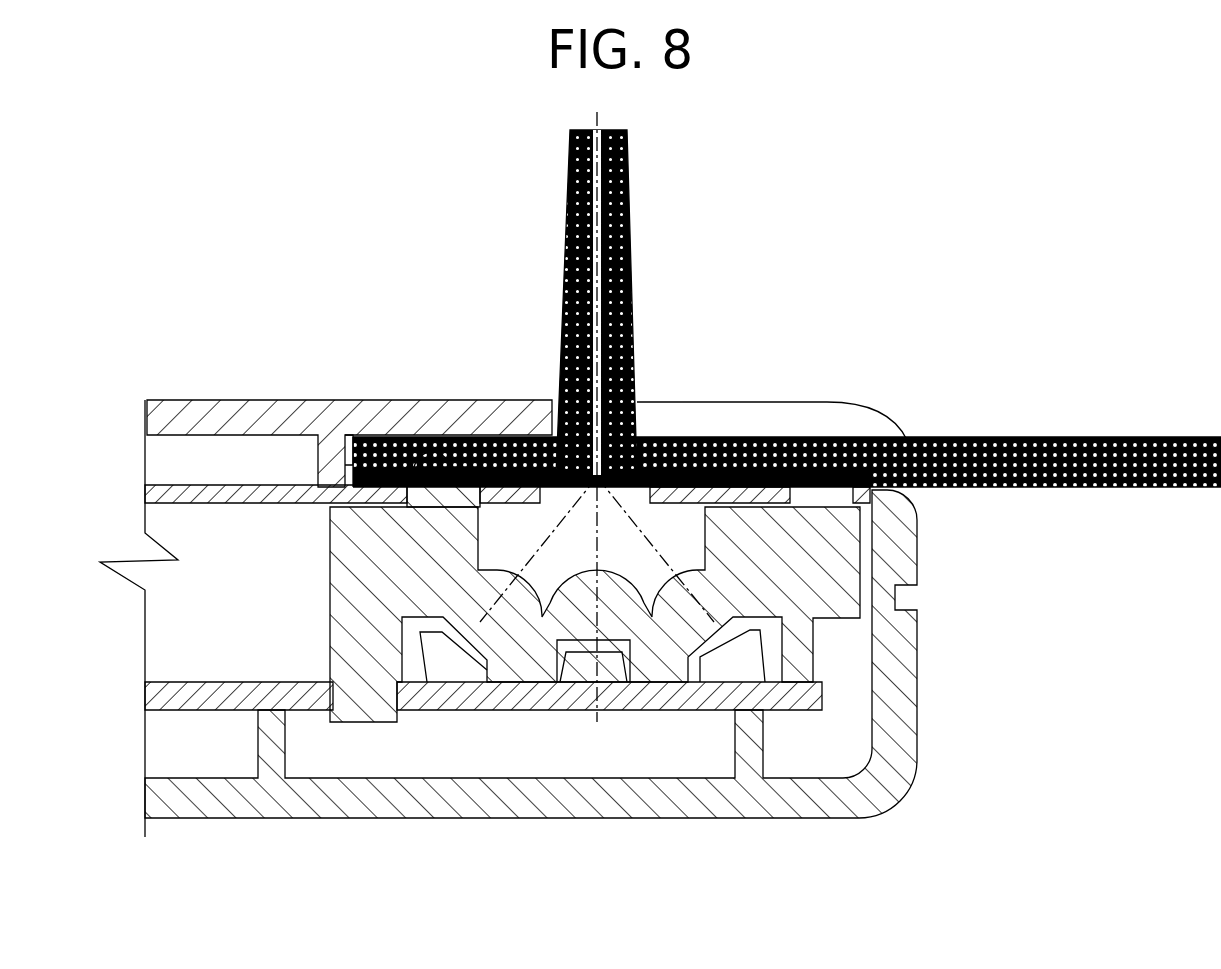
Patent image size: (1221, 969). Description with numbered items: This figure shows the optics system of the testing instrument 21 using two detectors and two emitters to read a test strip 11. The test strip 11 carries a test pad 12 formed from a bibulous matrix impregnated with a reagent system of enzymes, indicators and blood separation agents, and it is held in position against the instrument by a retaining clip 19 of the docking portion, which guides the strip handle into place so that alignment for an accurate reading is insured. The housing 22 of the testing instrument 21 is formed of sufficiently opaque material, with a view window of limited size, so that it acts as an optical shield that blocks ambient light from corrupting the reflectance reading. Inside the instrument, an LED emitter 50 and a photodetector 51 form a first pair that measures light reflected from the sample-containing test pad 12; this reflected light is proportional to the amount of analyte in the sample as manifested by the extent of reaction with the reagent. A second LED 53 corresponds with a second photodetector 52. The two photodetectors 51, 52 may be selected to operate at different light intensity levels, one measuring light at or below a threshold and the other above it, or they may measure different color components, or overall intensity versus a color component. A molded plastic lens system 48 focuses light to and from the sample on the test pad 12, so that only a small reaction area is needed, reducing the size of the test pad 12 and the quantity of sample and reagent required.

The test strip 11 is at (1054, 437).
The test pad 12 is at (660, 437).
The retaining clip 19 is at (196, 400).
The testing instrument 21 is at (917, 730).
The housing 22 is at (284, 485).
The molded plastic lens system 48 is at (683, 575).
The LED emitter 50 is at (593, 762).
The photodetector 51 is at (451, 668).
The photodetector 52 is at (724, 668).
The LED 53 is at (598, 690).